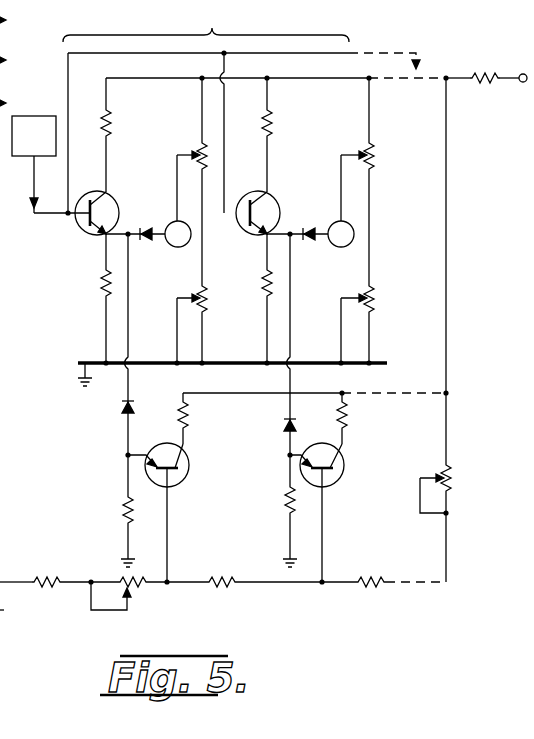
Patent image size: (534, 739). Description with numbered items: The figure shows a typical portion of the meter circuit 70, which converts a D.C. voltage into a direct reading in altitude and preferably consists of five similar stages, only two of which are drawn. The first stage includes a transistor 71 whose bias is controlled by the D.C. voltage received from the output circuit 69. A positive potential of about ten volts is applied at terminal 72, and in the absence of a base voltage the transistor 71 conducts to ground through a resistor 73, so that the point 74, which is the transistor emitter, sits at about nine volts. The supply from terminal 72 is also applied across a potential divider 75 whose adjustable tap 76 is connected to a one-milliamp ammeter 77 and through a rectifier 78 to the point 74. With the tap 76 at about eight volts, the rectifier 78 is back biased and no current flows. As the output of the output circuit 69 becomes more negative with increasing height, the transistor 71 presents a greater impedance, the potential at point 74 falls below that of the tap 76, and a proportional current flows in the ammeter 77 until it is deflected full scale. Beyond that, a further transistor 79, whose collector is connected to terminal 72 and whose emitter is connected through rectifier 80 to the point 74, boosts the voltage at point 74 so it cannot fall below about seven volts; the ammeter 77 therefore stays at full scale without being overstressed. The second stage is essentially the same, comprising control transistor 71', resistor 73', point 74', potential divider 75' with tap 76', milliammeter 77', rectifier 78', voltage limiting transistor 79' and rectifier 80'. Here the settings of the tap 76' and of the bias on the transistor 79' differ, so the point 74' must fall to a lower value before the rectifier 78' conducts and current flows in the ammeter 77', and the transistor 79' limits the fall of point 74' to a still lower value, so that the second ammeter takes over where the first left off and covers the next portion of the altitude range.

The output circuit 69 is at (38, 106).
The meter circuit 70 is at (206, 25).
The transistor 71 is at (107, 202).
The control transistor 71' is at (251, 228).
The terminal 72 is at (485, 81).
The resistor 73 is at (86, 298).
The resistor 73' is at (248, 298).
The point 74 is at (135, 253).
The point 74' is at (297, 257).
The potential divider 75 is at (183, 180).
The potential divider 75' is at (388, 180).
The adjustable tap 76 is at (170, 147).
The tap 76' is at (347, 138).
The ammeter 77 is at (178, 223).
The milliammeter 77' is at (369, 207).
The rectifier 78 is at (150, 216).
The rectifier 78' is at (310, 212).
The transistor 79 is at (172, 487).
The voltage limiting transistor 79' is at (335, 487).
The rectifier 80 is at (108, 427).
The rectifier 80' is at (272, 434).